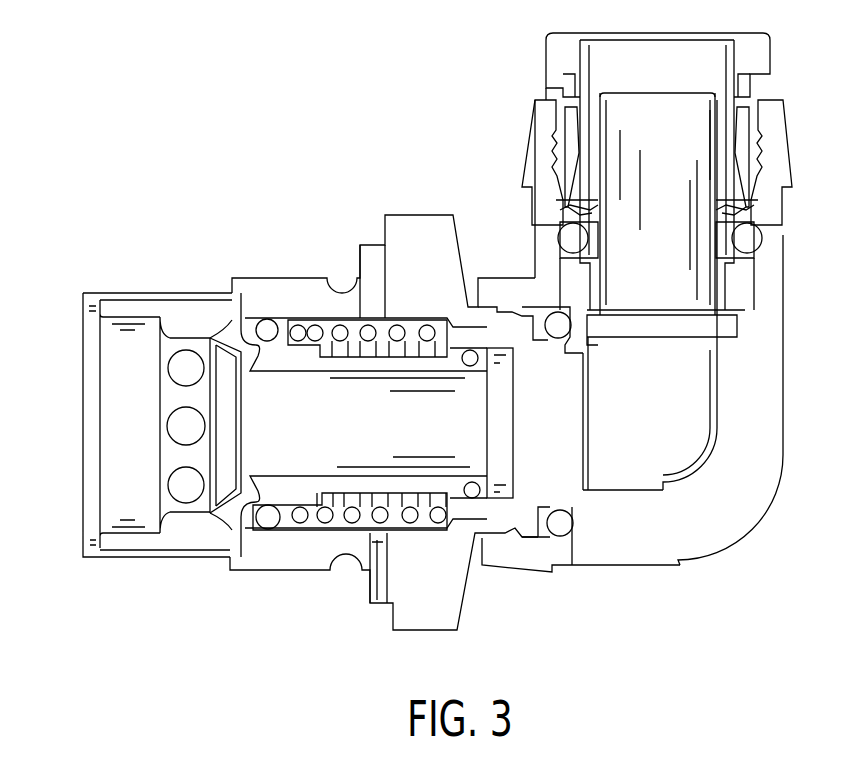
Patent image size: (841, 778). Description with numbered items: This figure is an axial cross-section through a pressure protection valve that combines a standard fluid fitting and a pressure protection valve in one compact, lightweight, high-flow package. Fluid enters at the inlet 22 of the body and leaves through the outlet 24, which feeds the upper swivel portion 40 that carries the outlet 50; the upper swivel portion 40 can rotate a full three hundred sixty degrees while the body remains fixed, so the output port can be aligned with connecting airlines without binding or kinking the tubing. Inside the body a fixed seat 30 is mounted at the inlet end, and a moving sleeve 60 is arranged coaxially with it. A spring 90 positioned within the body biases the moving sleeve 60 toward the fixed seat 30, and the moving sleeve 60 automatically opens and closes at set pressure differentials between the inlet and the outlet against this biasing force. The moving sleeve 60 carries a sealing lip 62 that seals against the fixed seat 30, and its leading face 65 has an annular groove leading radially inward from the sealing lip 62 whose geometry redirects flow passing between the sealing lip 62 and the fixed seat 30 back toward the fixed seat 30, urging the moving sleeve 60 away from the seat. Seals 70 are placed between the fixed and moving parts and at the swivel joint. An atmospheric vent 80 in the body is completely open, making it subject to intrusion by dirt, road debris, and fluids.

The inlet 22 is at (83, 553).
The outlet 24 is at (582, 500).
The fixed seat 30 is at (143, 442).
The upper swivel portion 40 is at (680, 548).
The outlet 50 is at (557, 50).
The moving sleeve 60 is at (245, 505).
The sealing lip 62 is at (233, 517).
The leading face 65 is at (244, 345).
The seals 70 is at (267, 320).
The atmospheric vent 80 is at (377, 570).
The spring 90 is at (325, 520).